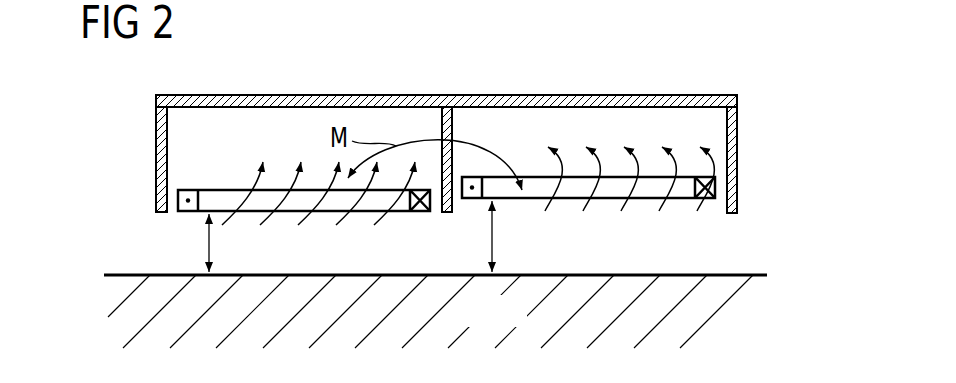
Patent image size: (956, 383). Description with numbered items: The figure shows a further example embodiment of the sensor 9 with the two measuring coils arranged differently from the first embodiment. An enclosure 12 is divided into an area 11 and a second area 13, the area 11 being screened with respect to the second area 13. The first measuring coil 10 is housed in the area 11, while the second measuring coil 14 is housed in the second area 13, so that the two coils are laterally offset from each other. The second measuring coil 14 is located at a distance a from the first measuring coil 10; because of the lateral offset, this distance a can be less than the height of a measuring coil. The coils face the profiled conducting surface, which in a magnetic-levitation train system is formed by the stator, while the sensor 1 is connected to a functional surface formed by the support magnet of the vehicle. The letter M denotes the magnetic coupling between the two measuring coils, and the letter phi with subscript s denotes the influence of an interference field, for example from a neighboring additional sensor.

The sensor 1 is at (727, 290).
The sensor 9 is at (447, 125).
The first measuring coil 10 is at (183, 213).
The area 11 is at (175, 150).
The enclosure 12 is at (588, 103).
The second area 13 is at (720, 158).
The second measuring coil 14 is at (470, 198).